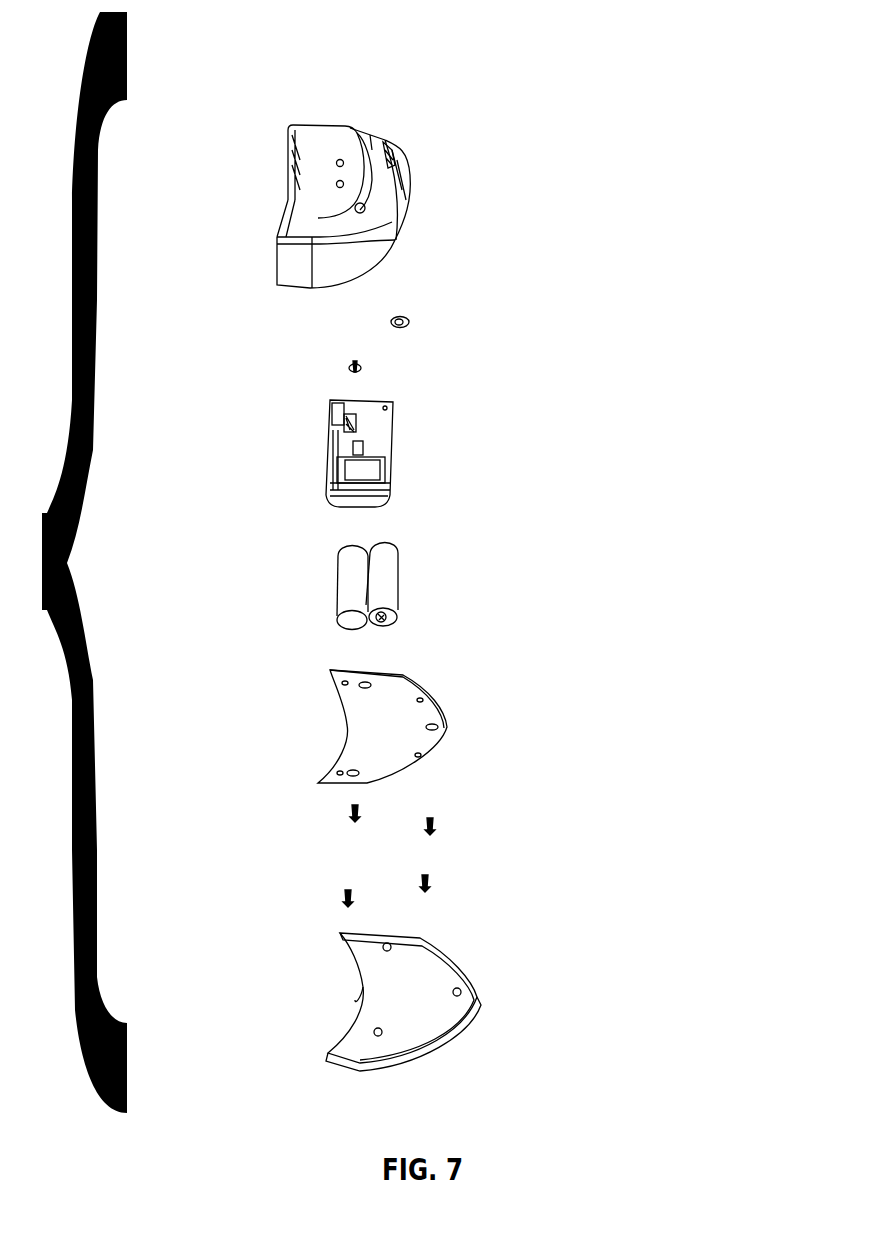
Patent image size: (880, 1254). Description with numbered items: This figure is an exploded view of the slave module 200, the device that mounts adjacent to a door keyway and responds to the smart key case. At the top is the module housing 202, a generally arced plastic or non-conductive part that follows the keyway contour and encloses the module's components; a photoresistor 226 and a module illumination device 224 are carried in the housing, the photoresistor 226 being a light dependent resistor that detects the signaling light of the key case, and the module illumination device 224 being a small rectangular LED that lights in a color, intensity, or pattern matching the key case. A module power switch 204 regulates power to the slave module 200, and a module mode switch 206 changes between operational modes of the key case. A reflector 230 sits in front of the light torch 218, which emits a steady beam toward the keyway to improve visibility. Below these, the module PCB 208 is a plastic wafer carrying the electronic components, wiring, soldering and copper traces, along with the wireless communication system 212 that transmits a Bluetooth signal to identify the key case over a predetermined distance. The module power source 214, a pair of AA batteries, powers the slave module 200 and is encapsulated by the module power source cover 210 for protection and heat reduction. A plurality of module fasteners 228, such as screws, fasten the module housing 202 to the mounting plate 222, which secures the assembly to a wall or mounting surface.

The slave module 200 is at (500, 143).
The module housing 202 is at (313, 125).
The module power switch 204 is at (350, 366).
The module mode switch 206 is at (363, 210).
The module PCB 208 is at (388, 447).
The module power source cover 210 is at (347, 722).
The wireless communication system 212 is at (358, 426).
The module power source 214 is at (400, 590).
The light torch 218 is at (412, 330).
The mounting plate 222 is at (478, 1000).
The module illumination device 224 is at (316, 172).
The photoresistor 226 is at (340, 186).
The module fasteners 228 is at (433, 880).
The reflector 230 is at (390, 165).